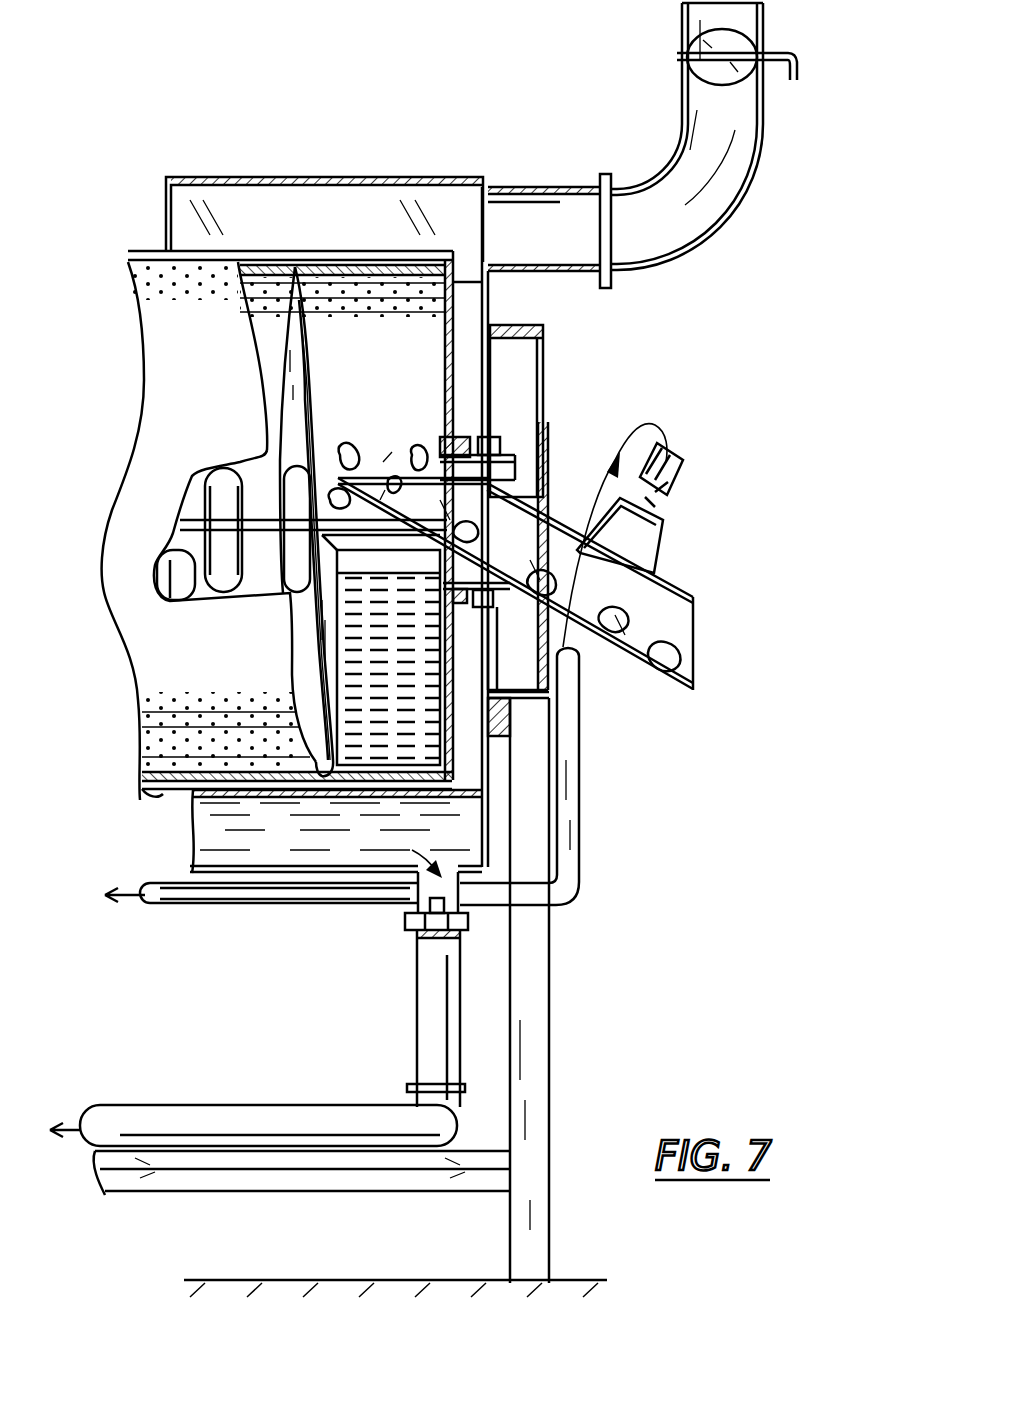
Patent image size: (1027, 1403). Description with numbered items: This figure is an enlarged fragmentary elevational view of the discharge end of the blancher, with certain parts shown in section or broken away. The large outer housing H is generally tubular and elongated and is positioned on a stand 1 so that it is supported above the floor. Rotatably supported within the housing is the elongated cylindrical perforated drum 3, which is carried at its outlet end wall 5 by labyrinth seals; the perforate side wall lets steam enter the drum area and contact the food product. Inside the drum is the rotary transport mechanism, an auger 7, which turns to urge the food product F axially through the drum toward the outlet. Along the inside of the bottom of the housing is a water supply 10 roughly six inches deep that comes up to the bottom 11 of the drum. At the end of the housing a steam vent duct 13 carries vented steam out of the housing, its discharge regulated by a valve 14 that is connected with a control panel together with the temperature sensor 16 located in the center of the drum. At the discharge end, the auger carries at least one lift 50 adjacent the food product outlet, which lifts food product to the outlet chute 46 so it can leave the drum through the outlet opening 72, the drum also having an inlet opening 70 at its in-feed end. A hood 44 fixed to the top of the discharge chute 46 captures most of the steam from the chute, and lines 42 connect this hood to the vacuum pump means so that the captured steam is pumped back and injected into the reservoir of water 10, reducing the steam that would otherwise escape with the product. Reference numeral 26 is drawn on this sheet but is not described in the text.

The stand 1 is at (551, 1063).
The perforated drum 3 is at (341, 268).
The outlet end wall 5 is at (445, 352).
The auger 7 is at (316, 348).
The water supply 10 is at (205, 836).
The bottom of the drum 11 is at (155, 790).
The steam vent duct 13 is at (766, 128).
The valve 14 is at (800, 55).
The temperature sensor 16 is at (236, 514).
The drain pipe 26 is at (412, 1026).
The line 42 is at (582, 803).
The hood 44 is at (666, 553).
The discharge chute 46 is at (698, 612).
The lift 50 is at (392, 462).
The inlet opening 70 is at (222, 490).
The outlet opening 72 is at (480, 596).
The outer housing H is at (339, 180).
The food product F is at (352, 455).